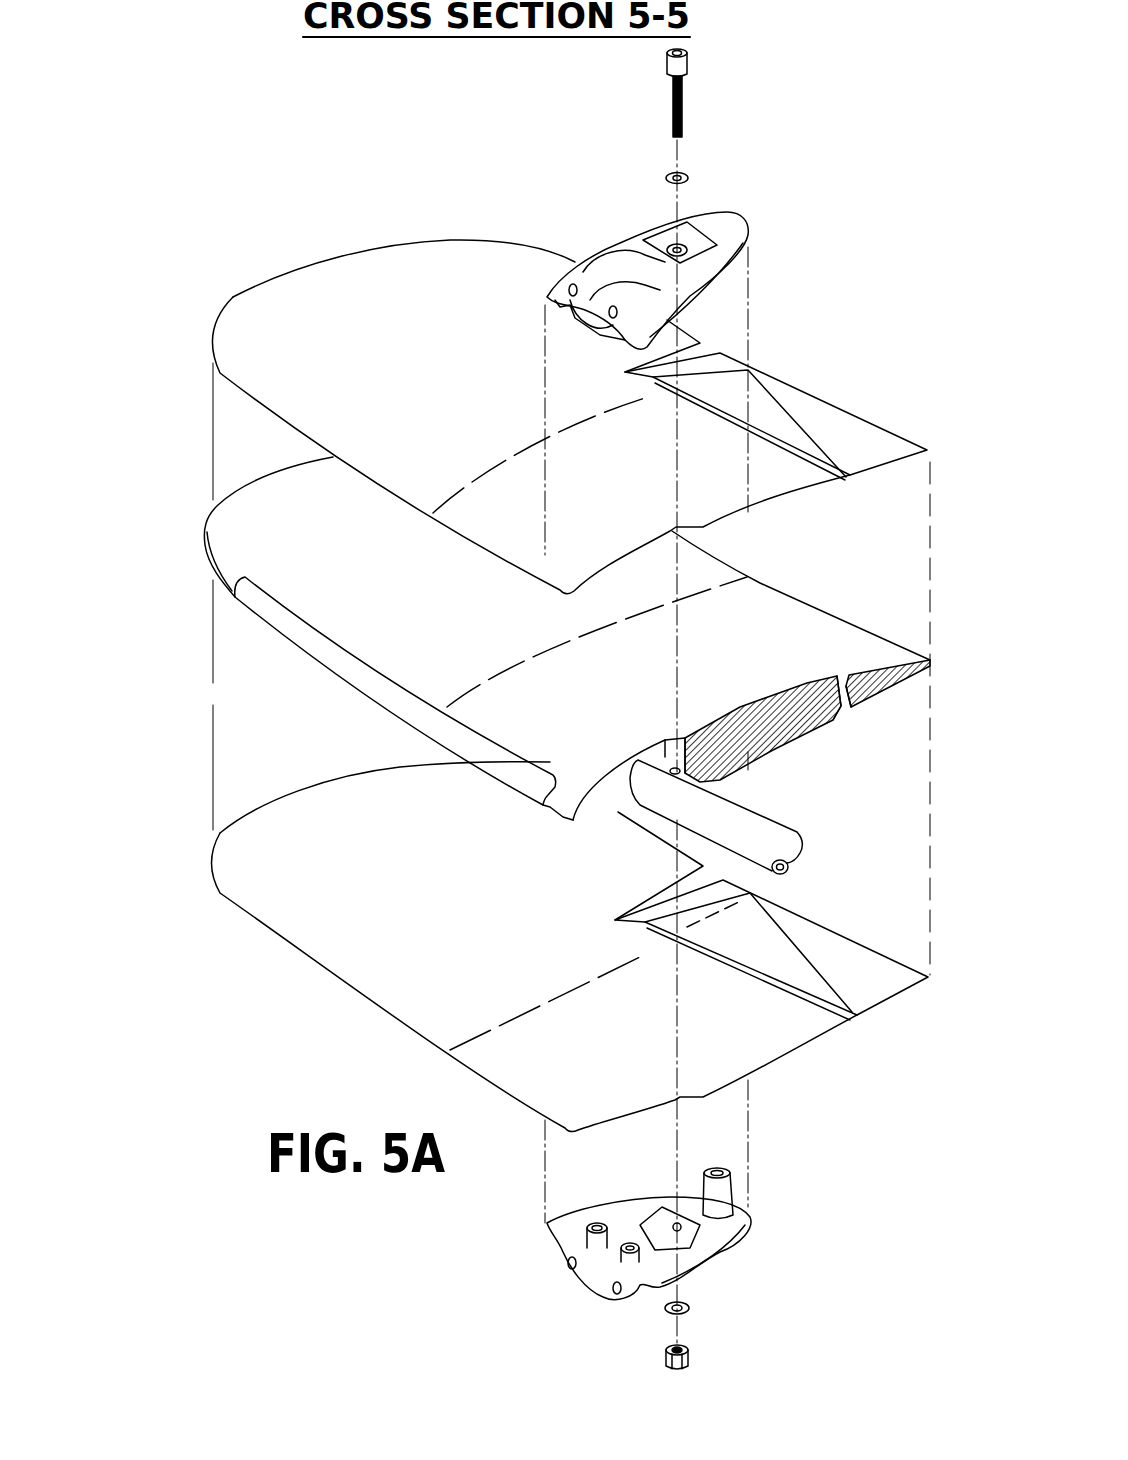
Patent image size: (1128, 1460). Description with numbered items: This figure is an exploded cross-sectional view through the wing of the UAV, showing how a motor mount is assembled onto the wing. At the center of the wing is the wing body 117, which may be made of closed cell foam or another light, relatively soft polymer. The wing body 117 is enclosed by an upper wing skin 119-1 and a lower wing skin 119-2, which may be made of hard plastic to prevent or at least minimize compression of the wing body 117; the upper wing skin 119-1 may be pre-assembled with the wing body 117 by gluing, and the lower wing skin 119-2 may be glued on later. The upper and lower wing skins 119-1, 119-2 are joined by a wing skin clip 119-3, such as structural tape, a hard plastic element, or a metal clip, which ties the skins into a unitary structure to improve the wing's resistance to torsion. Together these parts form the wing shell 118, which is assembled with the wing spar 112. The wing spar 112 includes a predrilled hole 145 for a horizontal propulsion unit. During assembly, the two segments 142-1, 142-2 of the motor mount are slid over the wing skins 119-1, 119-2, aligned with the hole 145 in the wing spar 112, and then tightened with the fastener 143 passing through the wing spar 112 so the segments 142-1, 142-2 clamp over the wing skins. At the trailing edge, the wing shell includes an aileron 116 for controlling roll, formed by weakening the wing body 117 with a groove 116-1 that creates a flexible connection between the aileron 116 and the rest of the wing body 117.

The wing spar 112 is at (787, 832).
The aileron 116 is at (851, 662).
The groove 116-1 is at (843, 709).
The wing body 117 is at (407, 655).
The wing shell 118 is at (127, 443).
The upper wing skin 119-1 is at (257, 387).
The lower wing skin 119-2 is at (262, 812).
The wing skin clip 119-3 is at (267, 613).
The segment of motor mount 142-1 is at (618, 233).
The segment of motor mount 142-2 is at (637, 1217).
The fastener 143 is at (687, 73).
The hole 145 is at (750, 762).